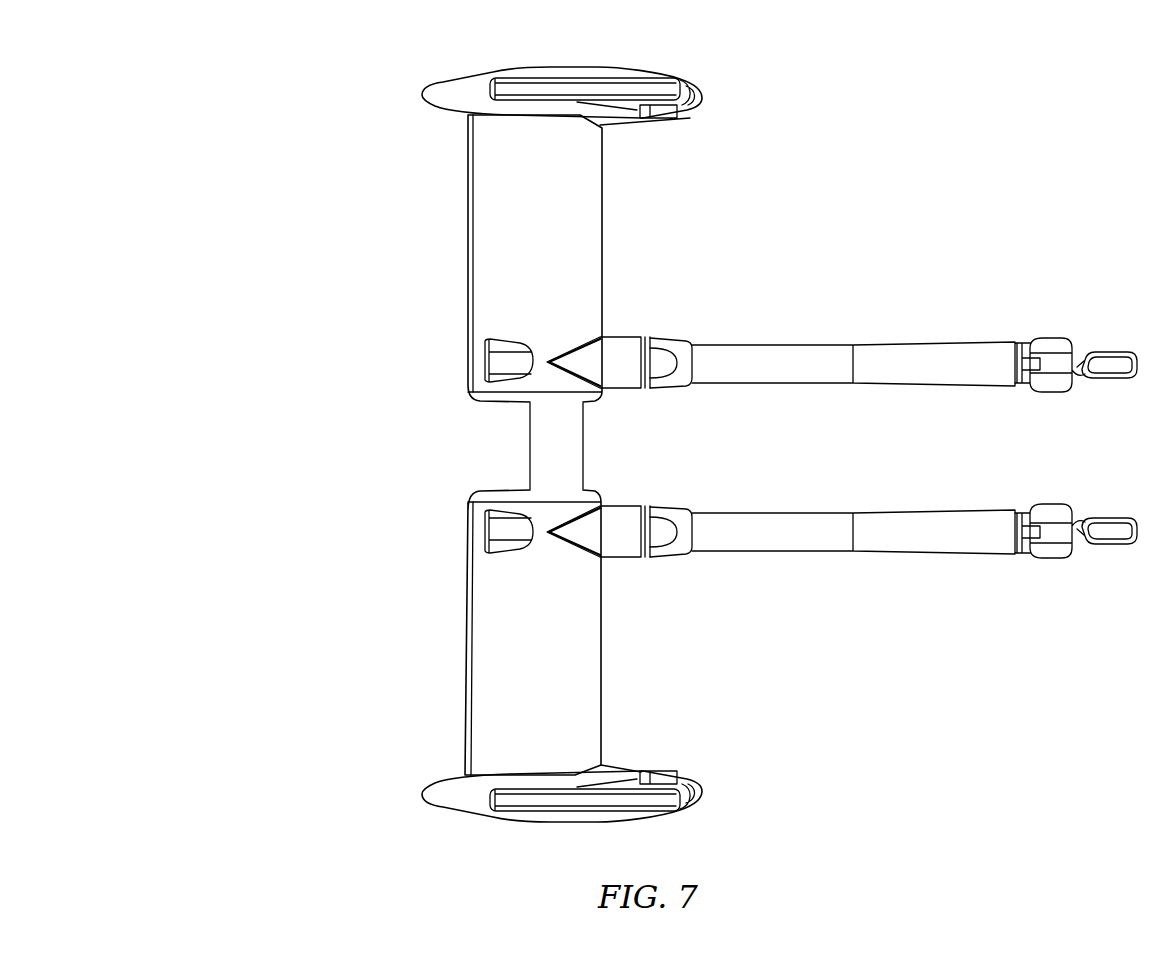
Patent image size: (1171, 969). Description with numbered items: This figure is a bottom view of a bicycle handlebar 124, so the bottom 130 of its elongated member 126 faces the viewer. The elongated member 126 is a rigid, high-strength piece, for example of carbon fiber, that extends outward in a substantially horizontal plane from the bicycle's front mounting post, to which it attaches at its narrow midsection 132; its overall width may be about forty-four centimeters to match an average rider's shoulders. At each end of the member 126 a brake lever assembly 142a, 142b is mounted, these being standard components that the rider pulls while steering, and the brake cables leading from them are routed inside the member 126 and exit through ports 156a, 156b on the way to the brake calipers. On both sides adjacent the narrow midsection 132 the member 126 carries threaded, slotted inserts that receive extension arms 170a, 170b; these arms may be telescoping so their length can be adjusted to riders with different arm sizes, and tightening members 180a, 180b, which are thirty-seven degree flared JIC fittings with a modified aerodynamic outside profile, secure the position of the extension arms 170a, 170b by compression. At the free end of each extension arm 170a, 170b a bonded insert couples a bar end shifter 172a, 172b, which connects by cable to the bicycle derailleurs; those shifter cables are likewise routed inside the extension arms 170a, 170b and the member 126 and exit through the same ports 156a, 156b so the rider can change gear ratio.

The handlebar 124 is at (347, 433).
The elongated member 126 is at (477, 433).
The bottom 130 is at (490, 283).
The narrow midsection 132 is at (567, 440).
The brake lever assembly 142a is at (521, 79).
The brake lever assembly 142b is at (504, 810).
The port 156a is at (496, 340).
The port 156b is at (496, 554).
The extension arm 170a is at (890, 350).
The extension arm 170b is at (890, 514).
The bar end shifter 172a is at (1060, 343).
The bar end shifter 172b is at (1060, 512).
The tightening member 180a is at (660, 389).
The tightening member 180b is at (660, 558).